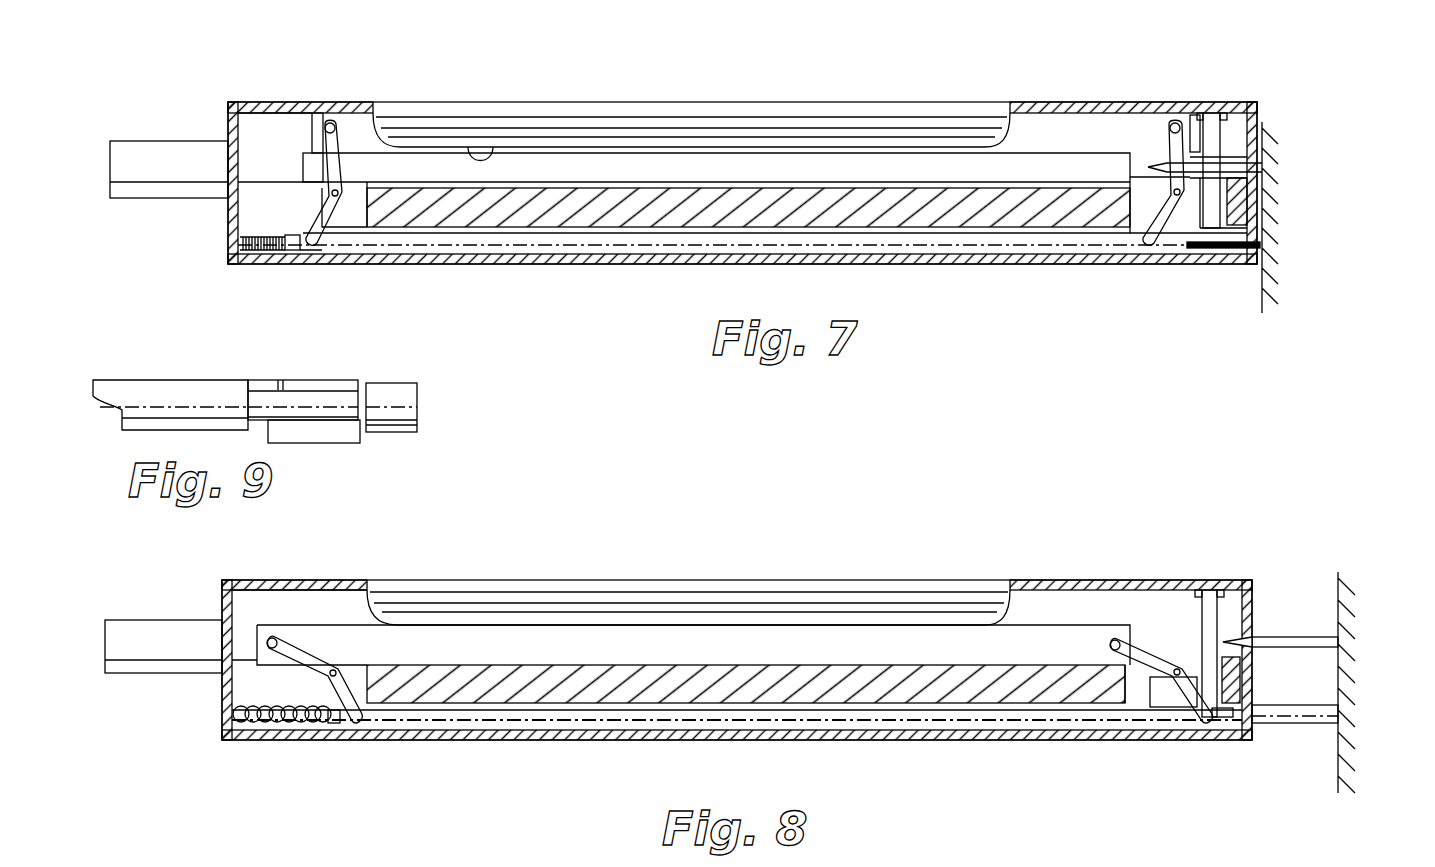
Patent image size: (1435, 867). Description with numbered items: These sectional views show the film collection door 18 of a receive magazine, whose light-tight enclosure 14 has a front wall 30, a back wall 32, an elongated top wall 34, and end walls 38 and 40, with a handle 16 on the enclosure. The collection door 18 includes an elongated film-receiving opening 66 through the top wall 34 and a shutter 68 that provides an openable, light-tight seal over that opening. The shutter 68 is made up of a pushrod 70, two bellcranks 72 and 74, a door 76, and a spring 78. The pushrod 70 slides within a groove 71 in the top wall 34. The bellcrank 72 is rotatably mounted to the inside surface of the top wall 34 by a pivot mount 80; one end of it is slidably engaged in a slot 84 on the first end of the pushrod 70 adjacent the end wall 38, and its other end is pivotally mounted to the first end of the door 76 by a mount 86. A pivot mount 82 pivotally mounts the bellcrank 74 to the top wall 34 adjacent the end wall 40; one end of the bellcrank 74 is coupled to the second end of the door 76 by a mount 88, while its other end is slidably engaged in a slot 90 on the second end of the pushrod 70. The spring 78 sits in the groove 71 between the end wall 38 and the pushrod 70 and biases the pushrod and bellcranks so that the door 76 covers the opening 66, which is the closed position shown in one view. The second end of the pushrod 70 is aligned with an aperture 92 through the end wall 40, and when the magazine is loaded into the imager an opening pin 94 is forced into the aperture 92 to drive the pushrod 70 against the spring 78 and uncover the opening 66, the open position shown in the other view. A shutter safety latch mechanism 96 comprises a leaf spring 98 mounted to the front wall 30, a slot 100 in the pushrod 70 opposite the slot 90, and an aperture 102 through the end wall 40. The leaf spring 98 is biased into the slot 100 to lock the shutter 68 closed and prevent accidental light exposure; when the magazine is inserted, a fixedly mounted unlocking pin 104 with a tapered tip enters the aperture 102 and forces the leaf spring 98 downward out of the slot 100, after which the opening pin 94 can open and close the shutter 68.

In FIG. 7, the light-tight enclosure 14 is at (962, 258).
In FIG. 8, the light-tight enclosure 14 is at (455, 745).
In FIG. 7, the handle 16 is at (135, 165).
In FIG. 8, the handle 16 is at (127, 635).
In FIG. 7, the collection door 18 is at (755, 155).
In FIG. 8, the collection door 18 is at (700, 637).
In FIG. 7, the front wall 30 is at (257, 105).
In FIG. 8, the front wall 30 is at (296, 584).
In FIG. 7, the back wall 32 is at (530, 256).
In FIG. 8, the back wall 32 is at (687, 735).
In FIG. 7, the top wall 34 is at (992, 105).
In FIG. 8, the top wall 34 is at (905, 585).
In FIG. 7, the end wall 38 is at (230, 230).
In FIG. 8, the end wall 38 is at (222, 598).
In FIG. 7, the end wall 40 is at (1268, 136).
In FIG. 8, the end wall 40 is at (1255, 608).
In FIG. 7, the film-receiving opening 66 is at (490, 158).
In FIG. 7, the shutter 68 is at (440, 148).
In FIG. 8, the shutter 68 is at (577, 630).
In FIG. 7, the pushrod 70 is at (630, 236).
In FIG. 9, the pushrod 70 is at (148, 390).
In FIG. 8, the pushrod 70 is at (553, 713).
In FIG. 7, the groove 71 is at (823, 247).
In FIG. 8, the groove 71 is at (912, 728).
In FIG. 7, the bellcrank 72 is at (320, 135).
In FIG. 8, the bellcrank 72 is at (285, 660).
In FIG. 7, the bellcrank 74 is at (1167, 142).
In FIG. 9, the bellcrank 74 is at (318, 380).
In FIG. 8, the bellcrank 74 is at (1145, 652).
In FIG. 7, the door 76 is at (372, 125).
In FIG. 8, the door 76 is at (415, 640).
In FIG. 7, the spring 78 is at (262, 254).
In FIG. 8, the spring 78 is at (277, 726).
In FIG. 7, the pivot mount 80 is at (342, 215).
In FIG. 8, the pivot mount 80 is at (336, 667).
In FIG. 7, the pivot mount 82 is at (1237, 200).
In FIG. 8, the pivot mount 82 is at (1175, 676).
In FIG. 7, the slot 84 is at (296, 252).
In FIG. 8, the slot 84 is at (340, 730).
In FIG. 7, the mount 86 is at (332, 122).
In FIG. 8, the mount 86 is at (270, 637).
In FIG. 7, the mount 88 is at (1176, 123).
In FIG. 8, the mount 88 is at (1118, 640).
In FIG. 7, the slot 90 is at (1162, 256).
In FIG. 8, the slot 90 is at (1192, 705).
In FIG. 7, the aperture 92 is at (1218, 258).
In FIG. 8, the aperture 92 is at (1268, 725).
In FIG. 7, the opening pin 94 is at (1262, 246).
In FIG. 8, the opening pin 94 is at (1318, 716).
In FIG. 7, the shutter safety latch mechanism 96 is at (1275, 104).
In FIG. 9, the shutter safety latch mechanism 96 is at (385, 443).
In FIG. 8, the shutter safety latch mechanism 96 is at (1268, 575).
In FIG. 7, the leaf spring 98 is at (1215, 112).
In FIG. 9, the leaf spring 98 is at (326, 432).
In FIG. 8, the leaf spring 98 is at (1213, 590).
In FIG. 9, the slot 100 is at (258, 425).
In FIG. 8, the aperture 102 is at (1237, 645).
In FIG. 7, the unlocking pin 104 is at (1262, 166).
In FIG. 8, the unlocking pin 104 is at (1310, 637).